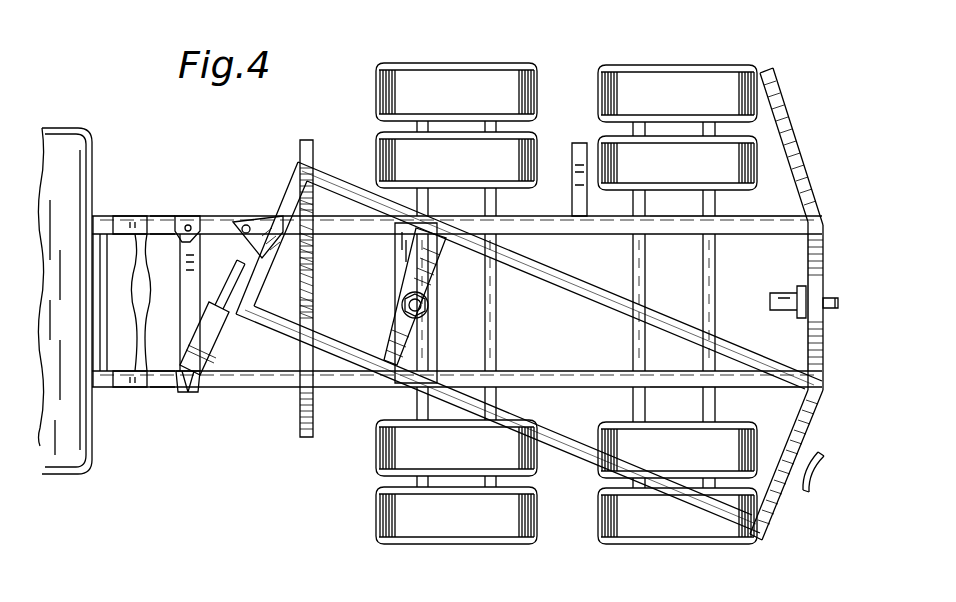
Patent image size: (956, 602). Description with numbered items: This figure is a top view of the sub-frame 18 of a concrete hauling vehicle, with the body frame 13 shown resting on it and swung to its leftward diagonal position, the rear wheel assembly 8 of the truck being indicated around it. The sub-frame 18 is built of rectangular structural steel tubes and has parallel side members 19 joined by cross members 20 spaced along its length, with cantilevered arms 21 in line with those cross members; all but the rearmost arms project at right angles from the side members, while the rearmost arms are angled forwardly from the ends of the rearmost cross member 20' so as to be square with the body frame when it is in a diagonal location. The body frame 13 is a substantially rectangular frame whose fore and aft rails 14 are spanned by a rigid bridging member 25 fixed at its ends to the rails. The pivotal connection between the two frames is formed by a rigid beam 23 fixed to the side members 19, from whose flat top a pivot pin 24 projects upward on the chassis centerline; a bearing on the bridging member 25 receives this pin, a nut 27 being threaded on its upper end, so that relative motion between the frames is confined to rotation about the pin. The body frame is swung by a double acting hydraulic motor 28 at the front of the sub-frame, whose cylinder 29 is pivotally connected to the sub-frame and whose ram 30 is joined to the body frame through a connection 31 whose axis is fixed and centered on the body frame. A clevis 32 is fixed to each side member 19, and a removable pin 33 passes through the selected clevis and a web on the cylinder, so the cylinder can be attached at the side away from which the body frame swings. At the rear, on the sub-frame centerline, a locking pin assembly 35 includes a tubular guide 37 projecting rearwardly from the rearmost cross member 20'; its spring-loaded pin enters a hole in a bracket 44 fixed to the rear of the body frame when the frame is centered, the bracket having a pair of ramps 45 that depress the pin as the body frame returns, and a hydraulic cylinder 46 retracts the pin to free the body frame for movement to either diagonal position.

The wheel assembly 8 is at (559, 41).
The body frame 13 is at (829, 405).
The rails 14 is at (553, 275).
The sub-frame 18 is at (834, 180).
The side members 19 is at (758, 232).
The cross members 20 is at (457, 305).
The rearmost cross member 20' is at (776, 302).
The cantilevered arms 21 is at (579, 148).
The beam 23 is at (396, 248).
The pivot pin 24 is at (428, 304).
The bridging member 25 is at (388, 328).
The nut 27 is at (440, 338).
The hydraulic motor 28 is at (226, 332).
The cylinder 29 is at (205, 355).
The ram 30 is at (232, 226).
The connection 31 is at (243, 222).
The clevis 32 is at (182, 216).
The removable pin 33 is at (200, 392).
The locking pin assembly 35 is at (849, 268).
The tubular guide 37 is at (838, 306).
The bracket 44 is at (812, 472).
The ramps 45 is at (822, 455).
The hydraulic cylinder 46 is at (772, 296).